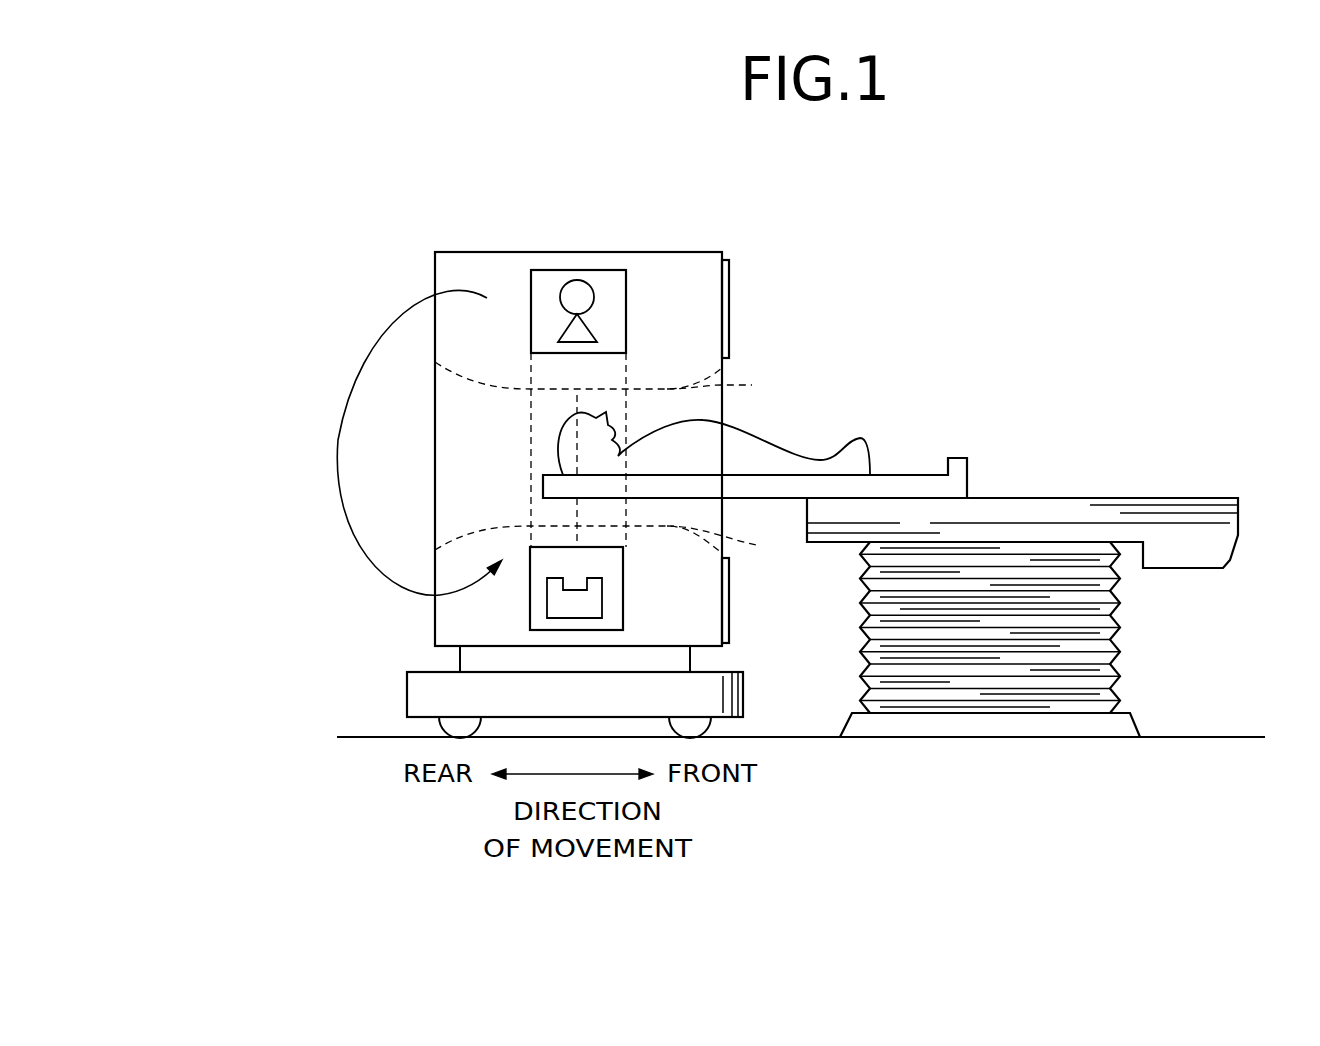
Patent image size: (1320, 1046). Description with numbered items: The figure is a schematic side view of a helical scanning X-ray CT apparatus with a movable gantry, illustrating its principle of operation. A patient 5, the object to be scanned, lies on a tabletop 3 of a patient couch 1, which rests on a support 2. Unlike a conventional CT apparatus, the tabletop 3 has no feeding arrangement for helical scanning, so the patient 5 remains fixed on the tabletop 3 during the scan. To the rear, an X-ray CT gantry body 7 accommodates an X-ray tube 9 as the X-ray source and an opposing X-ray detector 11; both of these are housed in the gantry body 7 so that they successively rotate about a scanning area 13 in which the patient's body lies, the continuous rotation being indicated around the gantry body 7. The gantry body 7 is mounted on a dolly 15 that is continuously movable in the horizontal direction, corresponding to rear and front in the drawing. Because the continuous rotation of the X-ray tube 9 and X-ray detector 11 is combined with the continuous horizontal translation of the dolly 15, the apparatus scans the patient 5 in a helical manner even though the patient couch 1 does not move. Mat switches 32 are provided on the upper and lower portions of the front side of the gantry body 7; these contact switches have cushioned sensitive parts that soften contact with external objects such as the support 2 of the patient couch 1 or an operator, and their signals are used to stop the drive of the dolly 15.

The patient couch 1 is at (1238, 529).
The support 2 is at (1110, 647).
The tabletop 3 is at (919, 475).
The patient 5 is at (802, 423).
The X-ray CT gantry body 7 is at (435, 265).
The X-ray tube 9 is at (577, 268).
The X-ray detector 11 is at (547, 608).
The scanning area 13 is at (600, 410).
The dolly 15 is at (407, 693).
The mat switch 32 is at (731, 290).